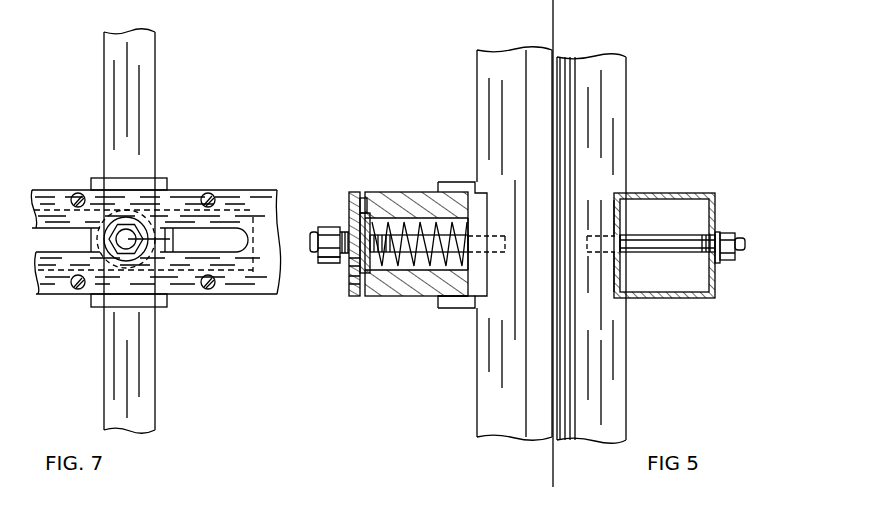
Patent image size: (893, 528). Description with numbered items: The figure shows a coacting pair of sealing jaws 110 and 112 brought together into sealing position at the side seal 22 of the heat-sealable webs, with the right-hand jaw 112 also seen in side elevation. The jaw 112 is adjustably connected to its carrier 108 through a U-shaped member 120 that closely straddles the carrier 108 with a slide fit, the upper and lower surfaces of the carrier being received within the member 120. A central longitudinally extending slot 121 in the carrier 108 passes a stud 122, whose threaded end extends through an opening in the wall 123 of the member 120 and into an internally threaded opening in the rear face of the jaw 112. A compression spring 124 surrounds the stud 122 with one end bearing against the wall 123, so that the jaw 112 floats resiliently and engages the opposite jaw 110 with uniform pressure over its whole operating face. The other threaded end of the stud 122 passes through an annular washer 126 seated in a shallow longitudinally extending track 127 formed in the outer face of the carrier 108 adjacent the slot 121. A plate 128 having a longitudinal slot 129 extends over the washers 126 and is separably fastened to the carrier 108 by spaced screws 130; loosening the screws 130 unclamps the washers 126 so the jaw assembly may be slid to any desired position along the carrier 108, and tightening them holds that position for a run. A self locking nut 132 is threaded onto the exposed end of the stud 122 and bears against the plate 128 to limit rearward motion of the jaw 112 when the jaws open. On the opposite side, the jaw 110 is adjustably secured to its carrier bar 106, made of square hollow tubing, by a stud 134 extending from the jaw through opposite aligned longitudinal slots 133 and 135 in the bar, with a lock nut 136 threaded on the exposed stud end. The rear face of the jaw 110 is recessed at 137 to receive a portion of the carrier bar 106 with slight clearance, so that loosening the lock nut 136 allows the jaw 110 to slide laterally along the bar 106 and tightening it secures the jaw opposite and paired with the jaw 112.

In FIG. 5, the side seal 22 is at (554, 20).
In FIG. 5, the carrier bar 106 is at (667, 193).
In FIG. 5, the carrier 108 is at (418, 176).
In FIG. 5, the sealing jaw 110 is at (627, 80).
In FIG. 7, the sealing jaw 112 is at (155, 38).
In FIG. 5, the sealing jaw 112 is at (476, 75).
In FIG. 7, the U-shaped member 120 is at (175, 169).
In FIG. 5, the U-shaped member 120 is at (447, 181).
In FIG. 5, the slot 121 is at (420, 270).
In FIG. 7, the stud 122 is at (167, 242).
In FIG. 5, the stud 122 is at (400, 270).
In FIG. 5, the wall 123 is at (470, 262).
In FIG. 5, the compression spring 124 is at (470, 308).
In FIG. 7, the annular washer 126 is at (104, 240).
In FIG. 5, the annular washer 126 is at (357, 281).
In FIG. 5, the track 127 is at (365, 274).
In FIG. 7, the plate 128 is at (50, 215).
In FIG. 5, the plate 128 is at (357, 175).
In FIG. 7, the slot 129 is at (248, 225).
In FIG. 5, the slot 129 is at (348, 262).
In FIG. 7, the screws 130 is at (75, 193).
In FIG. 5, the self locking nut 132 is at (330, 227).
In FIG. 5, the slot 133 is at (622, 236).
In FIG. 5, the stud 134 is at (632, 255).
In FIG. 5, the slot 135 is at (710, 256).
In FIG. 5, the lock nut 136 is at (727, 262).
In FIG. 5, the recess 137 is at (613, 200).